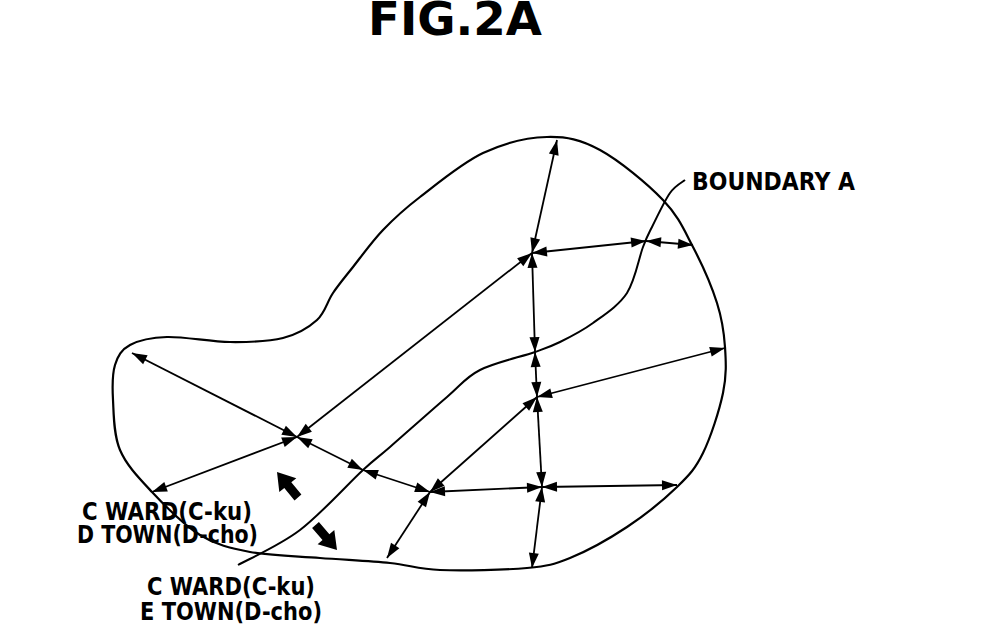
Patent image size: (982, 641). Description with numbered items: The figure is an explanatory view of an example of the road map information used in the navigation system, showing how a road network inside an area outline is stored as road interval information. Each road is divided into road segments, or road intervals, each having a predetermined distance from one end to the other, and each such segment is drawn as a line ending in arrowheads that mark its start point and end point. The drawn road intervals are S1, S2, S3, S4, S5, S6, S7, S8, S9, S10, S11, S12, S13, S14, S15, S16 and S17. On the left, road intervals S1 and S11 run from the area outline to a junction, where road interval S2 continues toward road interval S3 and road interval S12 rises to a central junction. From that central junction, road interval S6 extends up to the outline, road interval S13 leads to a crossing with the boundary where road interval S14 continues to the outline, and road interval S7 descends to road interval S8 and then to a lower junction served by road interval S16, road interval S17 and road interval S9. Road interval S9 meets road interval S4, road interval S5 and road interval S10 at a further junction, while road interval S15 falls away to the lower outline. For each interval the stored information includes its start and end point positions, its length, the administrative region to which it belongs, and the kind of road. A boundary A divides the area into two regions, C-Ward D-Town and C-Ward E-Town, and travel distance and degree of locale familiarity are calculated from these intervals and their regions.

The road interval S1 is at (214, 395).
The road interval S2 is at (330, 445).
The road interval S3 is at (396, 472).
The road interval S4 is at (486, 476).
The road interval S5 is at (609, 473).
The road interval S6 is at (529, 196).
The road interval S7 is at (548, 302).
The road interval S8 is at (554, 374).
The road interval S9 is at (555, 442).
The road interval S10 is at (558, 527).
The road interval S11 is at (224, 463).
The road interval S12 is at (414, 345).
The road interval S13 is at (589, 236).
The road interval S14 is at (669, 260).
The road interval S15 is at (422, 525).
The road interval S16 is at (483, 444).
The road interval S17 is at (631, 364).